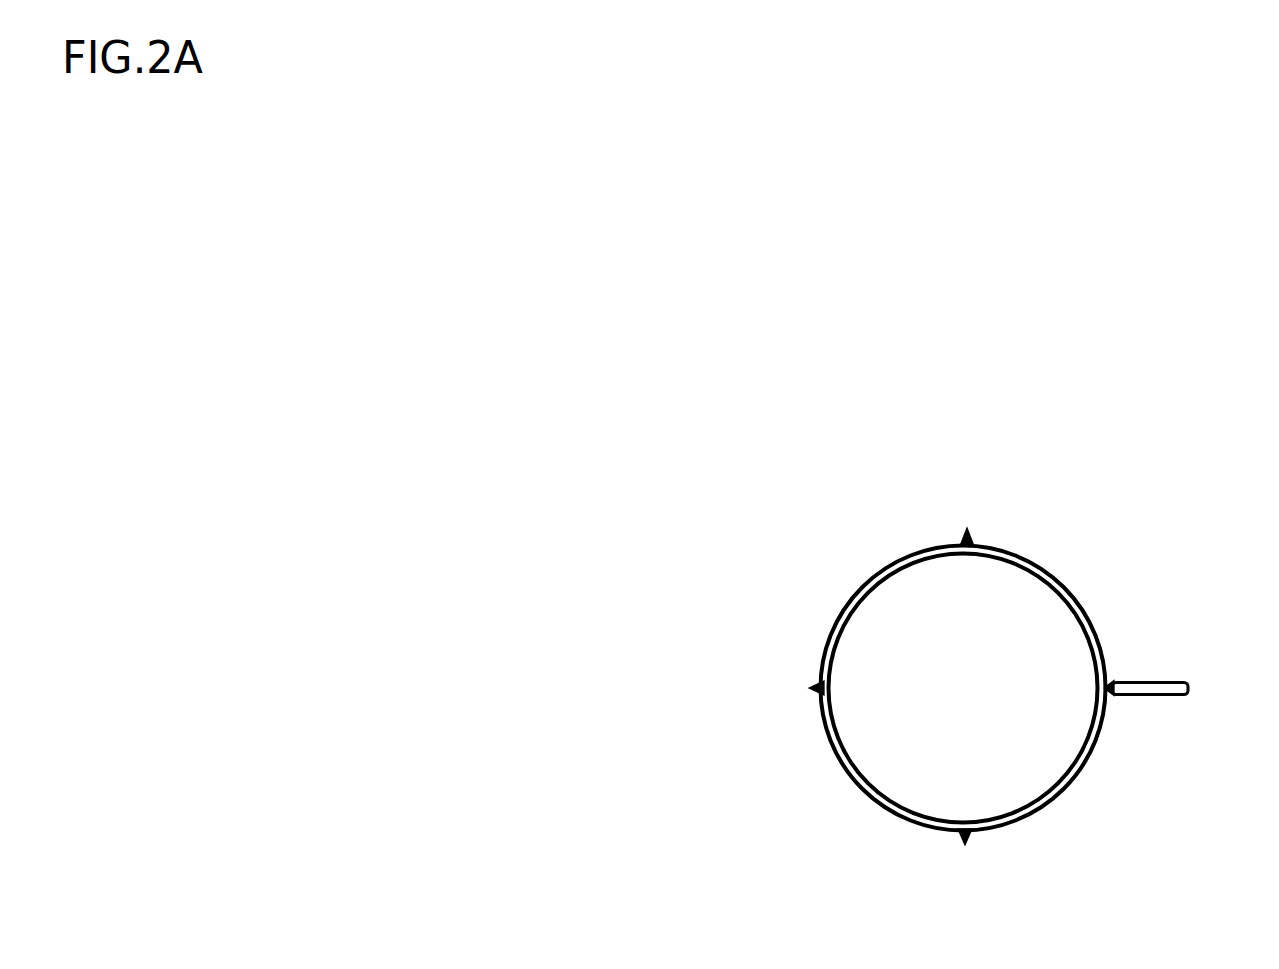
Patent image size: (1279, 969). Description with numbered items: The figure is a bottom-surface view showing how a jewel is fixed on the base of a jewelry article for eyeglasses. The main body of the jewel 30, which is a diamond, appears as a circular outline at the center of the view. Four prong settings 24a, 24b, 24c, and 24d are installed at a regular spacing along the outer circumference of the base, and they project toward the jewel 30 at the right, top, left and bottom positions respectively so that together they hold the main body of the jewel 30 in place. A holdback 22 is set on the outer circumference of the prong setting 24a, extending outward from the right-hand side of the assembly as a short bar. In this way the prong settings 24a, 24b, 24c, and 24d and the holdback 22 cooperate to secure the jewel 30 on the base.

The jewel 30 is at (1091, 602).
The holdback 22 is at (1168, 683).
The prong setting 24a is at (1118, 697).
The prong setting 24b is at (974, 533).
The prong setting 24c is at (812, 690).
The prong setting 24d is at (962, 848).